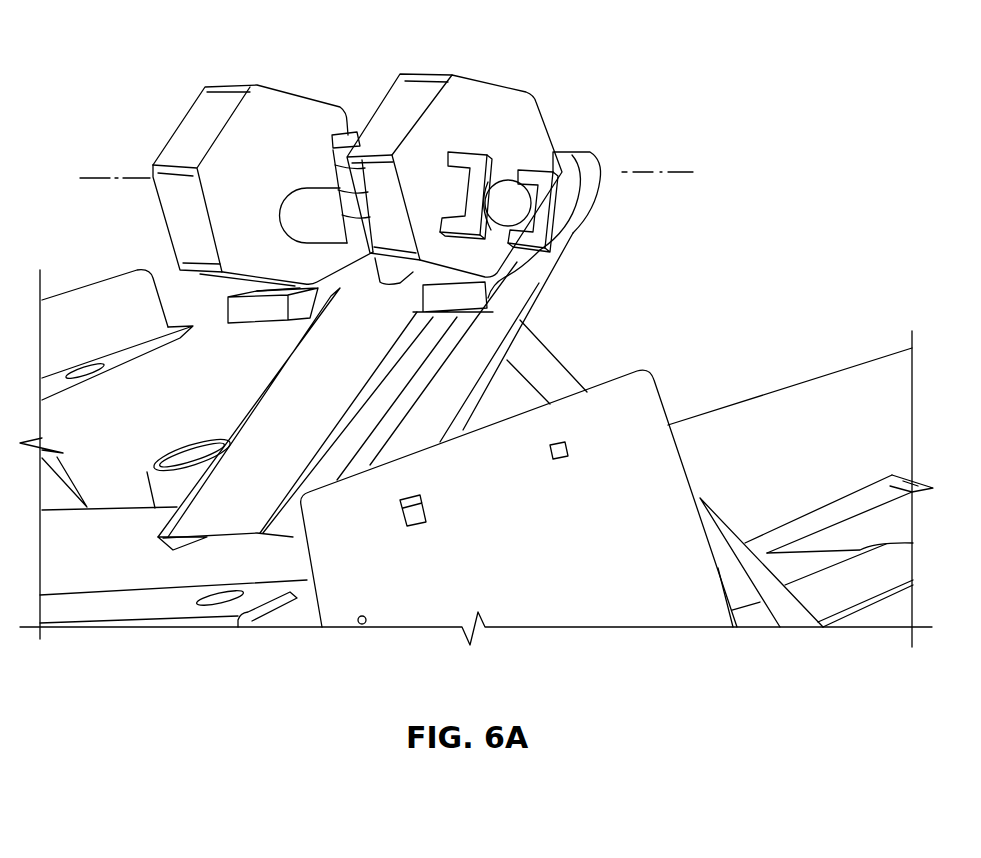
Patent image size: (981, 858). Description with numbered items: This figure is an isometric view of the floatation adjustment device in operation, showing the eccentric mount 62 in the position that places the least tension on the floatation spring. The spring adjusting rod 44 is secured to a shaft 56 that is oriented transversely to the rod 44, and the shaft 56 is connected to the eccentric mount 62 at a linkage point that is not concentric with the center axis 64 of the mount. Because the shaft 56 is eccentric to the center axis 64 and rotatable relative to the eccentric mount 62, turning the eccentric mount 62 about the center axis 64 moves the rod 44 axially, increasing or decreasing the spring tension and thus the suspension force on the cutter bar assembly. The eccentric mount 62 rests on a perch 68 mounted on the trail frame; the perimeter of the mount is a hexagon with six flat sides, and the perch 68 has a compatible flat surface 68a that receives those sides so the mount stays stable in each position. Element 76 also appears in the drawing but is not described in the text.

The spring adjusting rod 44 is at (553, 360).
The shaft 56 is at (303, 212).
The eccentric mount 62 is at (530, 110).
The center axis 64 is at (661, 172).
The perch 68 is at (263, 423).
The flat surface 68a is at (565, 205).
The washer 76 is at (353, 130).